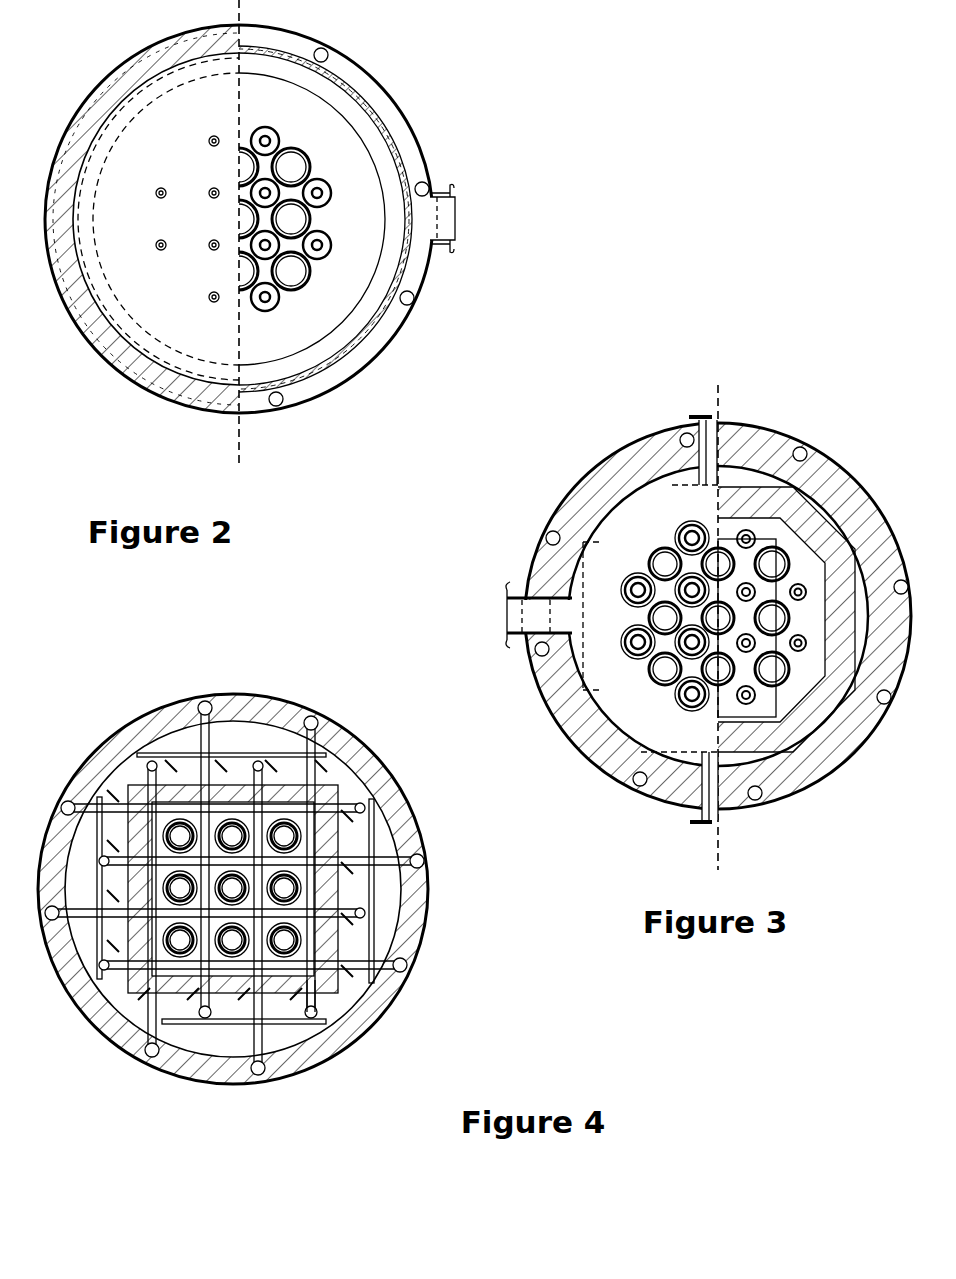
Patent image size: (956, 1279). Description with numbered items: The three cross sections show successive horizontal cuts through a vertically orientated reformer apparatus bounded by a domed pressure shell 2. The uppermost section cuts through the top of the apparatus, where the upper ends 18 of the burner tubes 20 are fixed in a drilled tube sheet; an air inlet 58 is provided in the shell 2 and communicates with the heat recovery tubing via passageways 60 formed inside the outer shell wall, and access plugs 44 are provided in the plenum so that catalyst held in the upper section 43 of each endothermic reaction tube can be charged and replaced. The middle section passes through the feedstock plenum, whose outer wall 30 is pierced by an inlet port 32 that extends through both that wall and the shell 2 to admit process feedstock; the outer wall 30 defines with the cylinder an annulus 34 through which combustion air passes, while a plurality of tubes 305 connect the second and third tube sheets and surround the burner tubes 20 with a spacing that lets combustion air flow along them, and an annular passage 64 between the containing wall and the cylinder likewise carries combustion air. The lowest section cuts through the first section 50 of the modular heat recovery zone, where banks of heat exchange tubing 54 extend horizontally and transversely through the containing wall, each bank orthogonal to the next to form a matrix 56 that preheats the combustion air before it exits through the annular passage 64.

In FIG. 2, the pressure shell 2 is at (381, 74).
In FIG. 3, the pressure shell 2 is at (817, 473).
In FIG. 4, the pressure shell 2 is at (417, 802).
In FIG. 2, the upper ends of burner tubes 18 is at (161, 182).
In FIG. 2, the access plugs 44 is at (296, 160).
In FIG. 2, the tubes 305 is at (330, 240).
In FIG. 2, the air inlets 58 is at (455, 238).
In FIG. 2, the annulus 34 is at (427, 267).
In FIG. 3, the annulus 34 is at (836, 722).
In FIG. 2, the passageways 60 is at (393, 253).
In FIG. 3, the annular passage 64 is at (745, 560).
In FIG. 3, the burner tubes 20 is at (638, 585).
In FIG. 3, the inlet port 32 is at (506, 596).
In FIG. 3, the outer wall 30 is at (593, 697).
In FIG. 3, the upper section 43 is at (770, 682).
In FIG. 4, the matrix 56 is at (384, 759).
In FIG. 4, the first section 50 is at (345, 1000).
In FIG. 4, the heat exchange tubing 54 is at (317, 992).